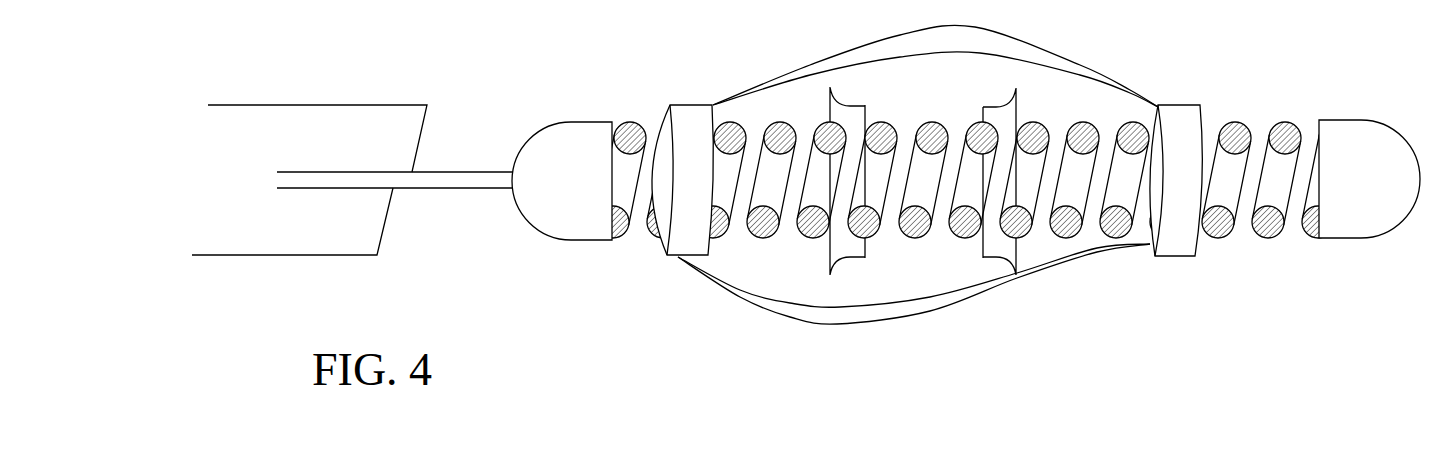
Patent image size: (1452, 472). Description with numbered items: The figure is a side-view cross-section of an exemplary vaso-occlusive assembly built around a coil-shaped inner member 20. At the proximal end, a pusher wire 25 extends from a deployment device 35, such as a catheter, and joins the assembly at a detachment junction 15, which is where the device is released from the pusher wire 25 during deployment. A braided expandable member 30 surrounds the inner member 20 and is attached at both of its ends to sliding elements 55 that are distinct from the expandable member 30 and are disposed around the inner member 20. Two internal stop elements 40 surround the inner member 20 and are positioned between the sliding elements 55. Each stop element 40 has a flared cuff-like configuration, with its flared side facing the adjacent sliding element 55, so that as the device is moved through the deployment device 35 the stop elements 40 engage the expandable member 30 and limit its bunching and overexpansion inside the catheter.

The detachment junction 15 is at (510, 192).
The inner member 20 is at (628, 122).
The pusher wire 25 is at (445, 172).
The expandable member 30 is at (815, 70).
The deployment device 35 is at (293, 238).
The stop element 40 is at (1000, 240).
The sliding element 55 is at (697, 130).